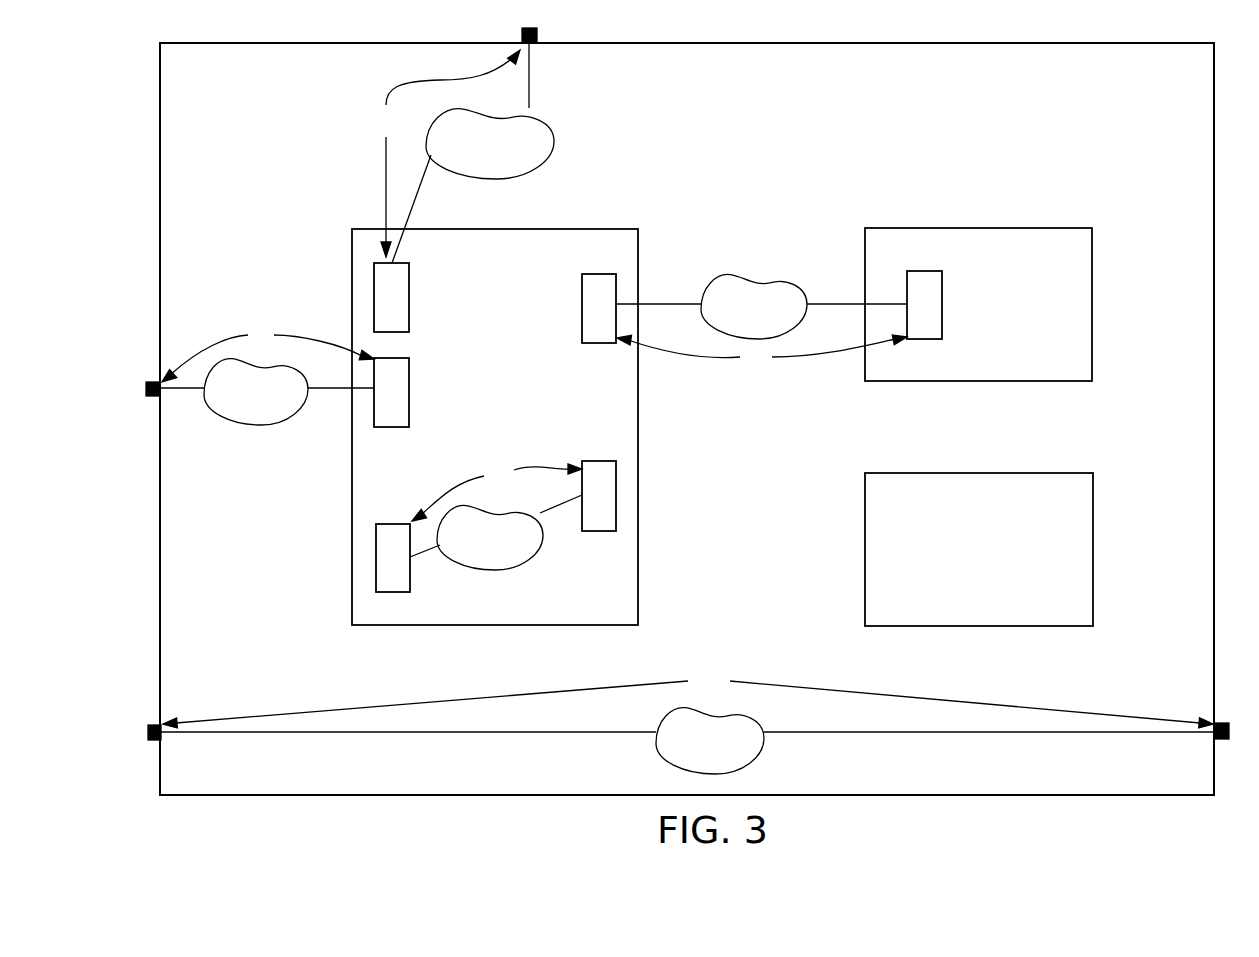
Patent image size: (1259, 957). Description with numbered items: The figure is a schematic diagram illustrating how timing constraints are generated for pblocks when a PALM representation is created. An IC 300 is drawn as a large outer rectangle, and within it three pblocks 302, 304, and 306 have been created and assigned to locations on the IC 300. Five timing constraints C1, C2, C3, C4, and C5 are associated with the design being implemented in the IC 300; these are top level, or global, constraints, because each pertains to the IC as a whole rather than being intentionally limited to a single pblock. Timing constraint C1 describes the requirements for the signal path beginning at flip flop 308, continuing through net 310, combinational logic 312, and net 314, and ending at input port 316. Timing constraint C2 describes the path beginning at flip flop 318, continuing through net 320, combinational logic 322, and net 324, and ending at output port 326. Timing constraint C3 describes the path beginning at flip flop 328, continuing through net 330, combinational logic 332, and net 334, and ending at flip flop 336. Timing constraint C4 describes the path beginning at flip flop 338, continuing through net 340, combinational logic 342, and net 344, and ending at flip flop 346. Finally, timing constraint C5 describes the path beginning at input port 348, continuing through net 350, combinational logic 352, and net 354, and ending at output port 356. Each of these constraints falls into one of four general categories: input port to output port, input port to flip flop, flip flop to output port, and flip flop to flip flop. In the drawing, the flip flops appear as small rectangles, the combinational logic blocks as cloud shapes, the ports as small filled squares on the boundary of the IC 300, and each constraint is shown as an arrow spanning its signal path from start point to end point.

The IC 300 is at (1071, 43).
The pblock 302 is at (567, 228).
The pblock 304 is at (1053, 228).
The pblock 306 is at (1093, 498).
The flip flop 308 is at (410, 287).
The net 310 is at (416, 206).
The combinational logic 312 is at (490, 144).
The net 314 is at (530, 70).
The input port 316 is at (539, 35).
The flip flop 318 is at (410, 383).
The net 320 is at (326, 392).
The combinational logic 322 is at (256, 392).
The net 324 is at (180, 392).
The output port 326 is at (151, 398).
The flip flop 328 is at (395, 523).
The net 330 is at (429, 557).
The combinational logic 332 is at (490, 537).
The net 334 is at (556, 508).
The flip flop 336 is at (601, 460).
The flip flop 338 is at (590, 345).
The net 340 is at (674, 303).
The combinational logic 342 is at (754, 306).
The net 344 is at (836, 303).
The flip flop 346 is at (943, 285).
The input port 348 is at (149, 742).
The net 350 is at (541, 734).
The combinational logic 352 is at (710, 741).
The net 354 is at (875, 734).
The output port 356 is at (1223, 742).
The timing constraint C1 is at (447, 153).
The timing constraint C2 is at (268, 353).
The timing constraint C3 is at (497, 492).
The timing constraint C4 is at (762, 351).
The timing constraint C5 is at (688, 699).